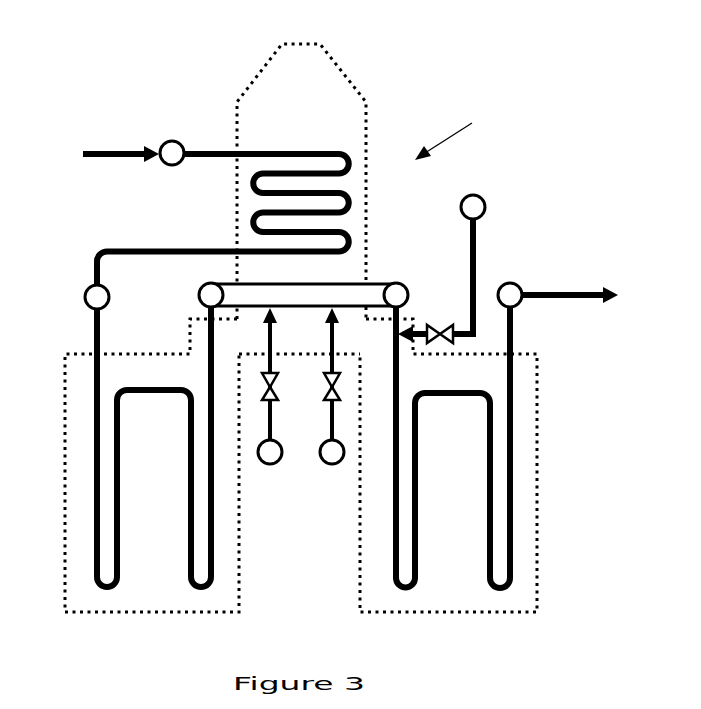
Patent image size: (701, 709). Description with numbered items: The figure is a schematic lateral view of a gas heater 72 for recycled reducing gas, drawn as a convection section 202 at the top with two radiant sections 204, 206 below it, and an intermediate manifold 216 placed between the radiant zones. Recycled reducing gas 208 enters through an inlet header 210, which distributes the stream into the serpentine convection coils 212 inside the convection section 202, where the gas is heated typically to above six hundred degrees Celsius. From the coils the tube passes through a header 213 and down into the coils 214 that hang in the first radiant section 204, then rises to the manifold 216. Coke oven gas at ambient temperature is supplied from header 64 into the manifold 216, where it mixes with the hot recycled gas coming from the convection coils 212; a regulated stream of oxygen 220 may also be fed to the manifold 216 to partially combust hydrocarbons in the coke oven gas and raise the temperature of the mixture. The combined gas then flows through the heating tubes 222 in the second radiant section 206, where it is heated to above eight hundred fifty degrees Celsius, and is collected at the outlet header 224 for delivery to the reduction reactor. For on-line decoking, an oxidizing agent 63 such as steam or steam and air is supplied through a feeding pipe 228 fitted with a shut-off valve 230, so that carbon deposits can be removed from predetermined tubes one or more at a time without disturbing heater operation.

The gas heater 72 is at (457, 131).
The oxidizing agent 63 is at (475, 207).
The coke oven gas header 64 is at (275, 455).
The convection section 202 is at (308, 131).
The radiant section 204 is at (163, 589).
The radiant section 206 is at (468, 589).
The recycled reducing gas 208 is at (134, 151).
The header 210 is at (171, 140).
The convection coils 212 is at (247, 224).
The header 213 is at (86, 292).
The heating coils 214 is at (94, 395).
The manifold 216 is at (203, 300).
The oxygen stream 220 is at (333, 457).
The heating tubes 222 is at (513, 426).
The header 224 is at (510, 283).
The feeding pipe 228 is at (468, 250).
The shut-off valve 230 is at (437, 325).